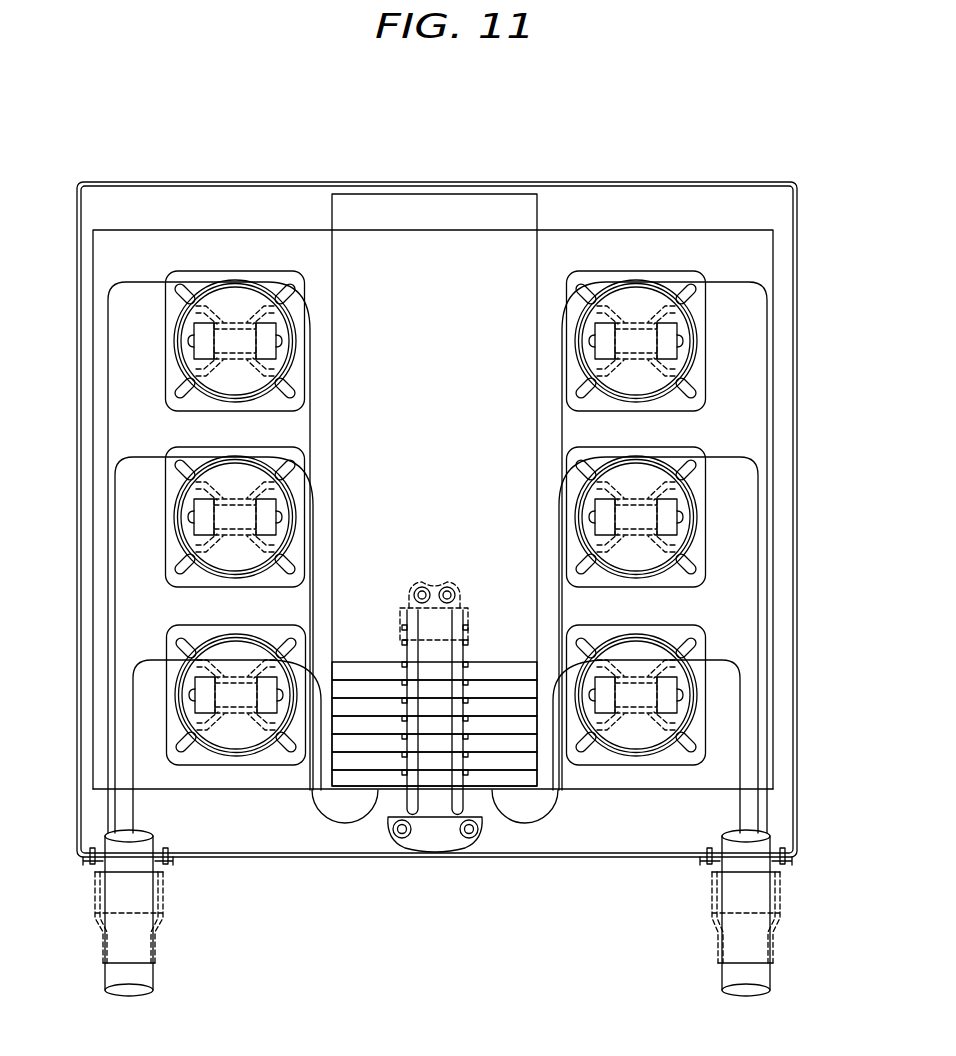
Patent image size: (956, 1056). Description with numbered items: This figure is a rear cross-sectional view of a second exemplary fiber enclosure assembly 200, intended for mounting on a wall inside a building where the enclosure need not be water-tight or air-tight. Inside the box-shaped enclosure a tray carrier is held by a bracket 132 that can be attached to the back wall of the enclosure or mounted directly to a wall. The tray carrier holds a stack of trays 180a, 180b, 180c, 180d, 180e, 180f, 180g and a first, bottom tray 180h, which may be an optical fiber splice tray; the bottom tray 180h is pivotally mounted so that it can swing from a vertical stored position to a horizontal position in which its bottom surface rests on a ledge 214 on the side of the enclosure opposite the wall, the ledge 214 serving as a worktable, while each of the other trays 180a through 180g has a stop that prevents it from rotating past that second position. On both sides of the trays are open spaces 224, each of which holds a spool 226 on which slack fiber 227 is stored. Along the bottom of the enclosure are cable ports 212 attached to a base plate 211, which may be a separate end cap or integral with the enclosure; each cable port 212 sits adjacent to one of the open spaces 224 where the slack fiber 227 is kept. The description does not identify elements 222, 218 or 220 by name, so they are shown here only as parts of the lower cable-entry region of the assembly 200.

The fiber enclosure assembly 200 is at (529, 160).
The base plate 211 is at (582, 229).
The ledge 214 is at (598, 781).
The tray 180a is at (458, 373).
The tray 180b is at (343, 658).
The tray 180c is at (362, 677).
The tray 180d is at (388, 695).
The tray 180e is at (480, 715).
The tray 180f is at (492, 733).
The tray 180g is at (510, 750).
The first tray 180h is at (472, 763).
The bracket 132 is at (417, 581).
The gas supply tubes / manifold 222 is at (108, 337).
The open space 224 is at (436, 532).
The spool 226 is at (213, 272).
The slack fiber 227 is at (207, 398).
The gas supply pipe 218 is at (155, 980).
The pipe fitting 220 is at (163, 900).
The cable port 212 is at (163, 867).